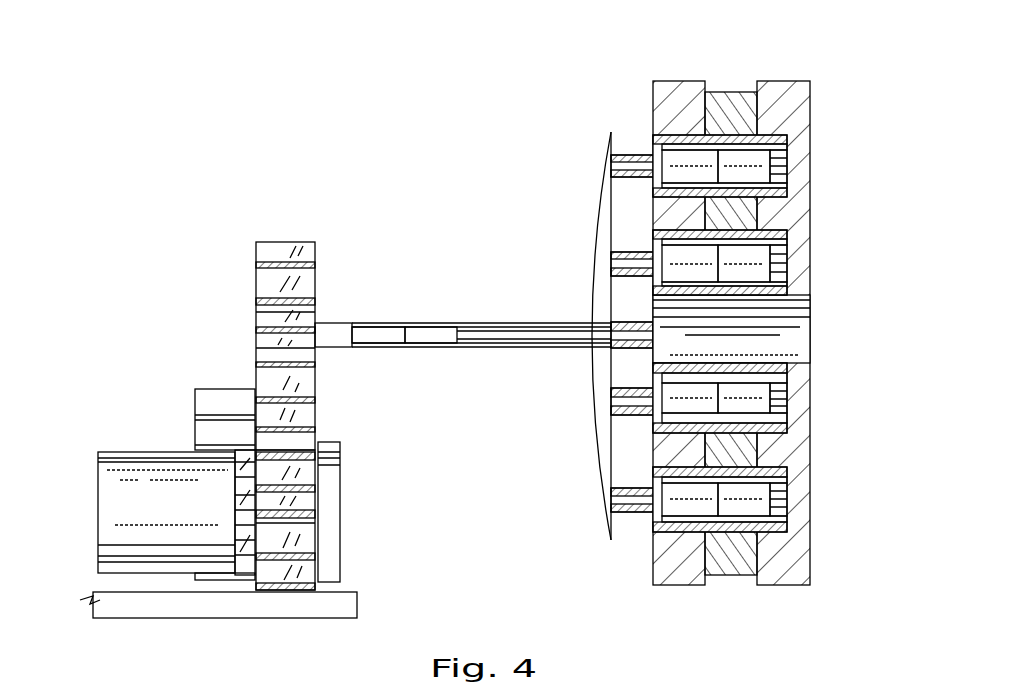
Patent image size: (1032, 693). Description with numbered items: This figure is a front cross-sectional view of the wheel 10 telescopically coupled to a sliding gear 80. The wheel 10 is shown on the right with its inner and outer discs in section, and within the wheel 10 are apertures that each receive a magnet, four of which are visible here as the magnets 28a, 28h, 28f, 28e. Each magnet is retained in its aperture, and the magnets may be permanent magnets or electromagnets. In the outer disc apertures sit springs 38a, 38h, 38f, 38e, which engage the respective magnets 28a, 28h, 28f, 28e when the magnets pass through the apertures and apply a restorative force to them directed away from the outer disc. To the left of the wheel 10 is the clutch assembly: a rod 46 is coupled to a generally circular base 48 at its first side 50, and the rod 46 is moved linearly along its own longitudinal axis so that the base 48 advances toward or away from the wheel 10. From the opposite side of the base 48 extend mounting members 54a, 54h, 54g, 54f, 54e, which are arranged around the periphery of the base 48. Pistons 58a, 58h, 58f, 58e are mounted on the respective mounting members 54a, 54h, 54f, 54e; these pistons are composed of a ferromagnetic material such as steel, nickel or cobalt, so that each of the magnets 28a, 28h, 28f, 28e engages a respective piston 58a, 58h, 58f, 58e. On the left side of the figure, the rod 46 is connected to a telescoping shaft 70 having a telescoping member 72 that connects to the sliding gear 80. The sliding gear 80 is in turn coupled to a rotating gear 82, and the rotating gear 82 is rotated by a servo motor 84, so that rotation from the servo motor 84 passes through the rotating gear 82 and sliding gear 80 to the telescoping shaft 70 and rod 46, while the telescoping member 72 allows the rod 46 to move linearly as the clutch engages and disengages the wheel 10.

The wheel 10 is at (812, 53).
The magnet 28a is at (790, 175).
The magnet 28h is at (790, 278).
The magnet 28f is at (790, 412).
The magnet 28e is at (790, 508).
The spring 38a is at (785, 165).
The spring 38h is at (785, 265).
The spring 38f is at (785, 400).
The spring 38e is at (785, 498).
The rod 46 is at (490, 333).
The base 48 is at (602, 182).
The first side 50 is at (594, 248).
The mounting member 54a is at (640, 160).
The mounting member 54h is at (640, 272).
The mounting member 54g is at (640, 349).
The mounting member 54f is at (640, 400).
The mounting member 54e is at (632, 512).
The piston 58a is at (692, 158).
The piston 58h is at (680, 260).
The piston 58f is at (690, 405).
The piston 58e is at (705, 520).
The telescoping shaft 70 is at (398, 302).
The telescoping member 72 is at (340, 350).
The sliding gear 80 is at (256, 248).
The rotating gear 82 is at (306, 510).
The servo motor 84 is at (122, 452).